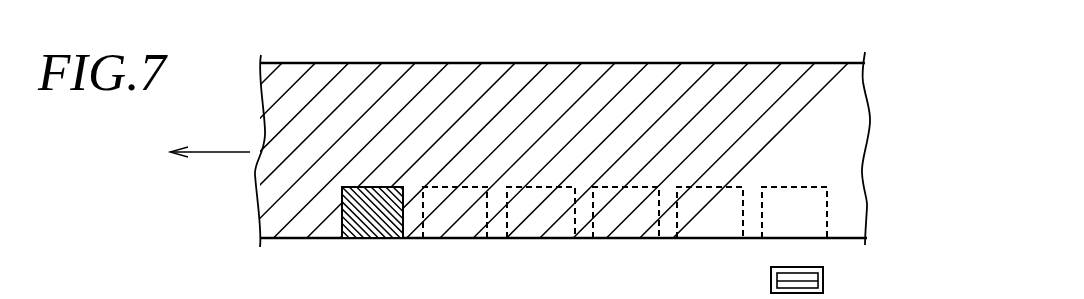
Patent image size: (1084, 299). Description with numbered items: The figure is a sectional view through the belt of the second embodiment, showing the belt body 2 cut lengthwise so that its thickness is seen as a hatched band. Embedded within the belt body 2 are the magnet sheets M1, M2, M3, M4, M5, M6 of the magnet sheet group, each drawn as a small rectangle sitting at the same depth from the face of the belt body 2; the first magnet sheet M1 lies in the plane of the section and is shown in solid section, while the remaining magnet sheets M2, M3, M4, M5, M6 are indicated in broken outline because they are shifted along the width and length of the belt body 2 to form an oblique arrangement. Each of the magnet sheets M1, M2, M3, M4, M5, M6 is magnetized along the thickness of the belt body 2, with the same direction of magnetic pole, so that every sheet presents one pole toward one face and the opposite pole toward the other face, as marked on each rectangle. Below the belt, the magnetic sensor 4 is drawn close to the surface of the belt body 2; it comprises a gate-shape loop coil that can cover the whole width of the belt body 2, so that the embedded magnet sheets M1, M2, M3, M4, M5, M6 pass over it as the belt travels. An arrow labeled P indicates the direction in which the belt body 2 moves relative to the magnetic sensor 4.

The belt body 2 is at (325, 60).
The magnetic sensor 4 is at (824, 286).
The magnet sheet M1 is at (337, 232).
The magnet sheet M2 is at (421, 222).
The magnet sheet M3 is at (505, 220).
The magnet sheet M4 is at (593, 220).
The magnet sheet M5 is at (678, 218).
The magnet sheet M6 is at (760, 222).
The conveyance direction P is at (213, 152).